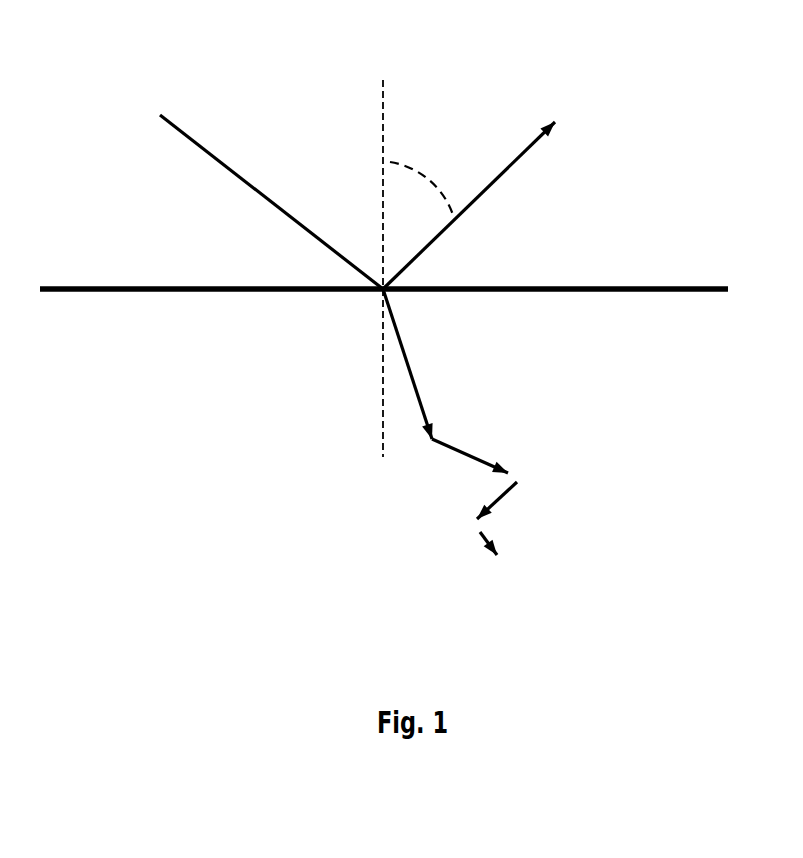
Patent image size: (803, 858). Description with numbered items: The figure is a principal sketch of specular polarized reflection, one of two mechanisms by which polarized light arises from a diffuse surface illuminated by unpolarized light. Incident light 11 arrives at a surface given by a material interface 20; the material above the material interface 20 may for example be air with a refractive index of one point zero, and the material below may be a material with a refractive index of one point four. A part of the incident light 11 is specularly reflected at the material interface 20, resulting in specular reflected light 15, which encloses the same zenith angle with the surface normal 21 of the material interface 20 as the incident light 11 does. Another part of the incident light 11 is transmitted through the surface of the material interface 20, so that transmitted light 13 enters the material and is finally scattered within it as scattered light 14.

The incident light 11 is at (207, 145).
The transmitted light 13 is at (407, 363).
The scattered light 14 is at (467, 512).
The specular reflected light 15 is at (533, 148).
The material interface 20 is at (68, 288).
The surface normal 21 is at (383, 115).